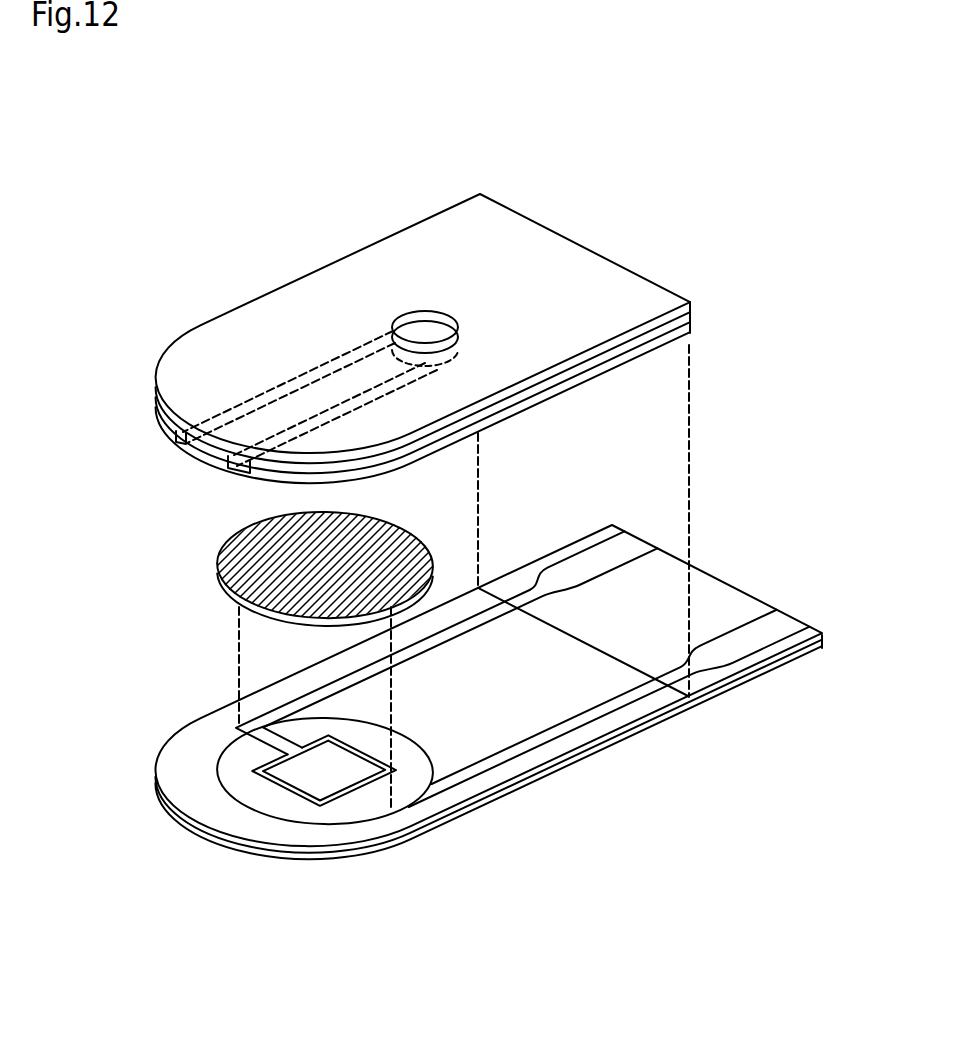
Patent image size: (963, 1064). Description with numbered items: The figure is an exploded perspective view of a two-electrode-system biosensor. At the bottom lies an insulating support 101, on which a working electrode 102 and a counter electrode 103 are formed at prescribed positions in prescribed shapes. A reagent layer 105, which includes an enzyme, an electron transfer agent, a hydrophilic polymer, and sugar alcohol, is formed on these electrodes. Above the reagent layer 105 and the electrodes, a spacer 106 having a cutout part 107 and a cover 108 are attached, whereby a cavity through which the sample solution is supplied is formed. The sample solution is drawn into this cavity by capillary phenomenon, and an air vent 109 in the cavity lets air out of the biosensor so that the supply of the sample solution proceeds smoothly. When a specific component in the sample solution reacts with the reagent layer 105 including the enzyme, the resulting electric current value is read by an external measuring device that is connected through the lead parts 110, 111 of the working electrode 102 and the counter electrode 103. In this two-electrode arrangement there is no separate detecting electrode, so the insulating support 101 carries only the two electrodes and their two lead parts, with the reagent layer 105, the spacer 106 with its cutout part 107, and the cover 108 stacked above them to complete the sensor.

The insulating support 101 is at (622, 735).
The working electrode 102 is at (287, 770).
The counter electrode 103 is at (353, 807).
The reagent layer 105 is at (247, 557).
The spacer 106 is at (175, 438).
The cutout part 107 is at (198, 452).
The cover 108 is at (658, 300).
The air vent 109 is at (417, 327).
The lead part 110 is at (630, 543).
The lead part 111 is at (778, 622).